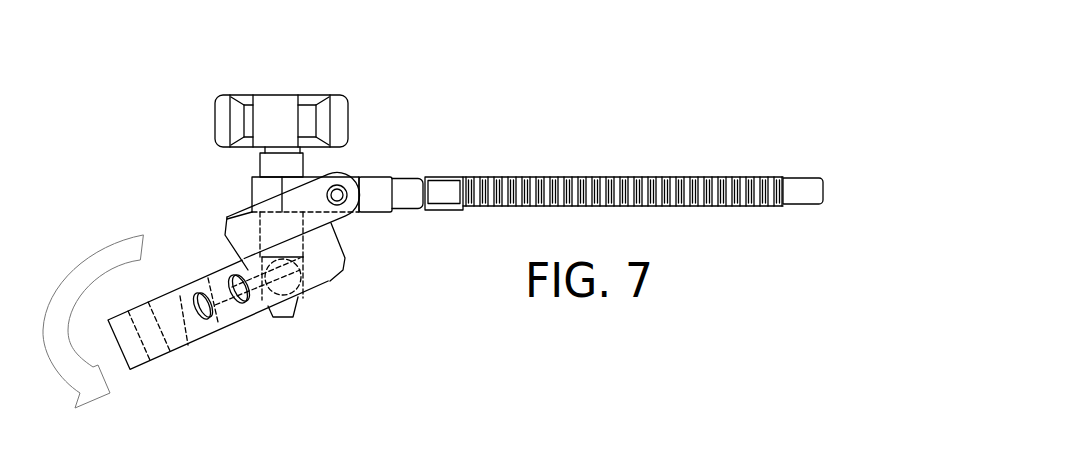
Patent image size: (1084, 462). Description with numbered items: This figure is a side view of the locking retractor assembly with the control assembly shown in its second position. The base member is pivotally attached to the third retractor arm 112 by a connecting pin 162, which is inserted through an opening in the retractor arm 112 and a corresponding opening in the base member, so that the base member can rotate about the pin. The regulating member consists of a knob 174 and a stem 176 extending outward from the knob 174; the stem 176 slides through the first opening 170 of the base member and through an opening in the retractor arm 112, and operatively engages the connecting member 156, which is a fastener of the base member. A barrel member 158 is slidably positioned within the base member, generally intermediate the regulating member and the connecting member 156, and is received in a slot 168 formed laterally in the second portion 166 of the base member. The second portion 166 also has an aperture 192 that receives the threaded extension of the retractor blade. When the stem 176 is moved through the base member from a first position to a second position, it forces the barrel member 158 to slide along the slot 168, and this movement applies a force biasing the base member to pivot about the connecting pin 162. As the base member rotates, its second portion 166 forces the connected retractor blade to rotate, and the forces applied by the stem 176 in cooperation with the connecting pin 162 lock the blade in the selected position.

The third retractor arm 112 is at (563, 177).
The connecting member 156 is at (300, 304).
The barrel member 158 is at (287, 276).
The connecting pin 162 is at (334, 183).
The second portion 166 is at (131, 356).
The slot 168 is at (252, 308).
The first opening 170 is at (268, 233).
The knob 174 is at (288, 93).
The stem 176 is at (297, 165).
The aperture 192 is at (146, 333).